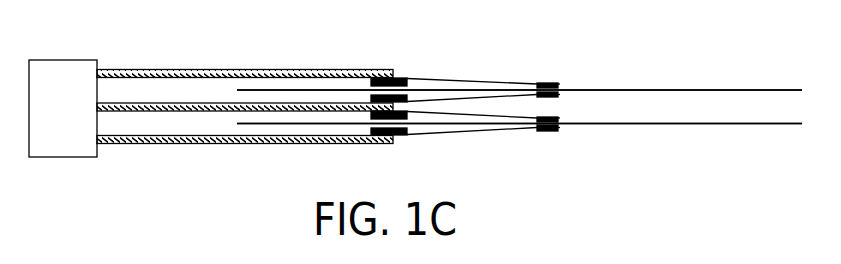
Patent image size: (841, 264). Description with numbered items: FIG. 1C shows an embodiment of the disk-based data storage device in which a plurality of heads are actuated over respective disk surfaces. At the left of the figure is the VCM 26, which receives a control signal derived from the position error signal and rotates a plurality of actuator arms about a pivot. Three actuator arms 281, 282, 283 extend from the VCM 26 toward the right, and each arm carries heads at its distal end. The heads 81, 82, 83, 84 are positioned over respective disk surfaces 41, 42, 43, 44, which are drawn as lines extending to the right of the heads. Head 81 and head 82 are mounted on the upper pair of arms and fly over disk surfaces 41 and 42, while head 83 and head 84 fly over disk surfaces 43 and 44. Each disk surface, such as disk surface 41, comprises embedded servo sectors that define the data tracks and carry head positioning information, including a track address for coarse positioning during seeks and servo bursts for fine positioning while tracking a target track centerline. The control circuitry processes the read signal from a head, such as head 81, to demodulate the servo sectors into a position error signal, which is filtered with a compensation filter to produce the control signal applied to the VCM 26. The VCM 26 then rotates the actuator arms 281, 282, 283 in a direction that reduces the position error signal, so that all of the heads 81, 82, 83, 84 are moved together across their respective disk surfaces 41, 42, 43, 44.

The VCM 26 is at (63, 60).
The actuator arm 281 is at (148, 70).
The actuator arm 282 is at (188, 103).
The actuator arm 283 is at (223, 136).
The disk surface 41 is at (695, 90).
The disk surface 42 is at (732, 90).
The disk surface 43 is at (735, 124).
The disk surface 44 is at (735, 124).
The head 81 is at (547, 82).
The head 82 is at (538, 92).
The head 83 is at (538, 123).
The head 84 is at (547, 130).